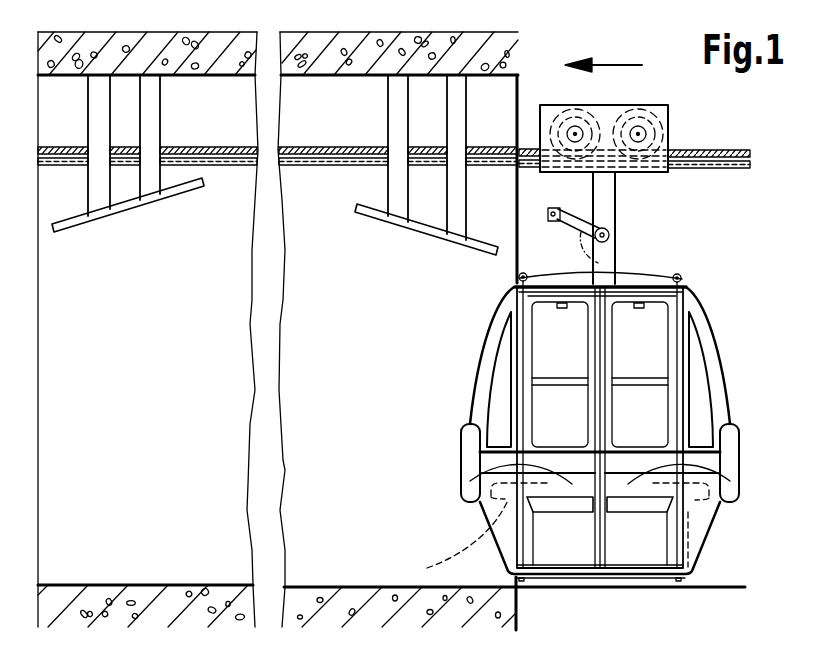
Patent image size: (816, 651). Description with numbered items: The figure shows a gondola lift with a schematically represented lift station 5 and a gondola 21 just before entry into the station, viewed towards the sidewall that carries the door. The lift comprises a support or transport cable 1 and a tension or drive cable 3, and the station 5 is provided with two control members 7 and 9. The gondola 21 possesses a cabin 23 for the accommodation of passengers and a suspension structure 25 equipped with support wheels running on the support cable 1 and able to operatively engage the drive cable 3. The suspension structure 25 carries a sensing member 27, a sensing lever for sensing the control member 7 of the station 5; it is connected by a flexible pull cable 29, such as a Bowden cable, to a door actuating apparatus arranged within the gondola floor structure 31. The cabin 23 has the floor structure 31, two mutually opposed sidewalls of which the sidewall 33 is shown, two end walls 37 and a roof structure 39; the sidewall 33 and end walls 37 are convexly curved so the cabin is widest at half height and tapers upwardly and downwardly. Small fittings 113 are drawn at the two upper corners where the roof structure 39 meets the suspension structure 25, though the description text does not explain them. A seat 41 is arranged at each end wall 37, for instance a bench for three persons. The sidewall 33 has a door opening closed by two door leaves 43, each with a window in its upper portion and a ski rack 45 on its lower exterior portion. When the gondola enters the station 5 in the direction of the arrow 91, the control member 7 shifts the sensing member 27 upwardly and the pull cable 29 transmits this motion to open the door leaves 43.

The support cable 1 is at (696, 147).
The drive cable 3 is at (237, 166).
The lift station 5 is at (512, 33).
The control member 7 is at (471, 241).
The control member 9 is at (126, 212).
The gondola 21 is at (480, 306).
The cabin 23 is at (480, 347).
The suspension structure 25 is at (616, 250).
The sensing member 27 is at (590, 211).
The pull cable 29 is at (617, 244).
The floor structure 31 is at (580, 574).
The sidewall 33 is at (495, 508).
The end wall 37 is at (474, 370).
The roof structure 39 is at (665, 279).
The seat 41 is at (427, 568).
The door leaf 43 is at (476, 473).
The ski rack 45 is at (552, 513).
The arrow 91 is at (621, 63).
The roof suspension hooks 113 is at (515, 271).